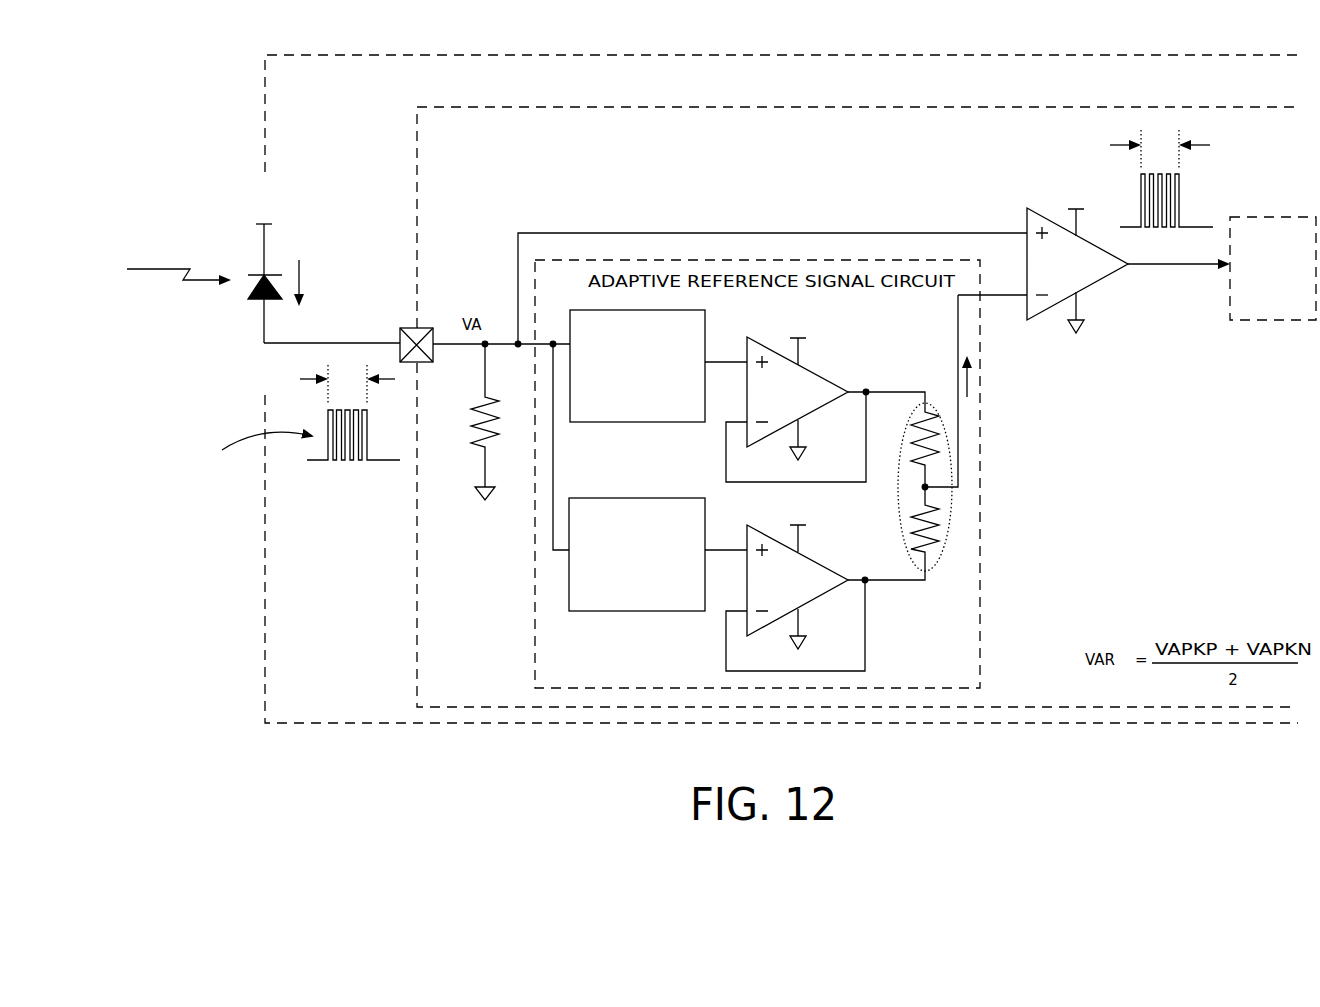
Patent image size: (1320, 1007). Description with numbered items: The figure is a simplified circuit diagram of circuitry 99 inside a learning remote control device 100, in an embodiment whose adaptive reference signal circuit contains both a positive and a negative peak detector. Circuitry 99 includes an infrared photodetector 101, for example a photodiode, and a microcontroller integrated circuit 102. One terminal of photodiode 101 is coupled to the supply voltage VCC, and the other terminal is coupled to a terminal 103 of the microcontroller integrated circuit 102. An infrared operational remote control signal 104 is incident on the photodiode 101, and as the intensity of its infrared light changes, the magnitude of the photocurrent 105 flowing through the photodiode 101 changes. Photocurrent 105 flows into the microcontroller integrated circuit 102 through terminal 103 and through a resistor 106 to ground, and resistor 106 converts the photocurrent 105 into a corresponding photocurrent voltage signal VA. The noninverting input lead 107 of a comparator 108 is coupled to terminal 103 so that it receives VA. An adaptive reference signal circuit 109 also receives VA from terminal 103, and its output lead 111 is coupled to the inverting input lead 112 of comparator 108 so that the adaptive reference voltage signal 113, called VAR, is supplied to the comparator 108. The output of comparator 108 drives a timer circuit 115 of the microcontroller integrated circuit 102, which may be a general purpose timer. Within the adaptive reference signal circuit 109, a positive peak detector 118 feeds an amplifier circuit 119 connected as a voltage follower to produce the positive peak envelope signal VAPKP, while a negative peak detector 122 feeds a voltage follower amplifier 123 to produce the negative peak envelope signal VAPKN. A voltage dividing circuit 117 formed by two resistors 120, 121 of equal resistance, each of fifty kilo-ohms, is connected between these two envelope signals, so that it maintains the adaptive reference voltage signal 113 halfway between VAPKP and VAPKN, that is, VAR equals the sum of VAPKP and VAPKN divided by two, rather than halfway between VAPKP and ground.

The learning remote control device 100 is at (629, 54).
The microcontroller integrated circuit 102 is at (886, 108).
The circuitry 99 is at (391, 136).
The infrared operational remote control signal 104 is at (178, 243).
The infrared photodetector 101 is at (281, 266).
The photocurrent 105 is at (299, 271).
The terminal 103 is at (413, 328).
The resistor 106 is at (464, 422).
The adaptive reference signal circuit 109 is at (747, 258).
The noninverting input lead 107 is at (1018, 230).
The inverting input lead 112 is at (1018, 292).
The output lead 111 is at (990, 297).
The comparator 108 is at (1046, 273).
The timer circuit 115 is at (1259, 301).
The positive peak detector 118 is at (623, 410).
The amplifier circuit 119 is at (781, 401).
The negative peak detector 122 is at (623, 600).
The voltage follower amplifier 123 is at (781, 589).
The resistor 120 is at (940, 432).
The resistor 121 is at (940, 525).
The voltage dividing circuit 117 is at (945, 567).
The adaptive reference voltage signal 113 is at (968, 362).